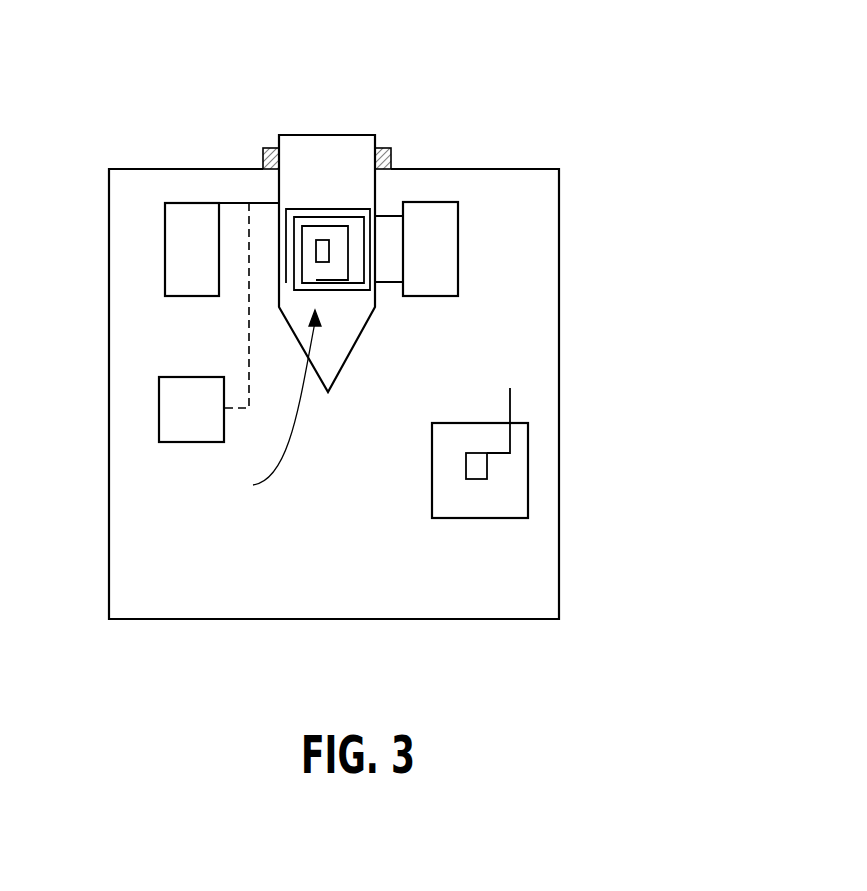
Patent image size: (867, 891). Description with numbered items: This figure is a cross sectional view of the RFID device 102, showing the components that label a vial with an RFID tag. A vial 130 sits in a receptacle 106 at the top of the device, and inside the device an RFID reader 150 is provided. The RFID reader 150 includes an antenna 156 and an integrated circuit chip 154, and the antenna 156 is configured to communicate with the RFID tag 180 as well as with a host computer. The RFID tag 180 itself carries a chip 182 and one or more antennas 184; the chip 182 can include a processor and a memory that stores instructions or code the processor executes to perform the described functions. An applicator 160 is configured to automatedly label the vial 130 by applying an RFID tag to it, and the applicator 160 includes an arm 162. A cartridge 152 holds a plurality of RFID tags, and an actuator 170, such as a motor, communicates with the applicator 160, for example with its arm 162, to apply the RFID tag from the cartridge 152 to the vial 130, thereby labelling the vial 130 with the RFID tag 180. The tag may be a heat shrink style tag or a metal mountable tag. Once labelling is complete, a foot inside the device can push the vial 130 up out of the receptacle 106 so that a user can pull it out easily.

The RFID device 102 is at (620, 49).
The receptacle 106 is at (391, 160).
The vial 130 is at (328, 135).
The RFID reader 150 is at (522, 458).
The cartridge 152 is at (458, 248).
The integrated circuit chip 154 is at (474, 479).
The antenna 156 is at (510, 400).
The applicator 160 is at (165, 248).
The arm 162 is at (249, 203).
The actuator 170 is at (159, 408).
The RFID tag 180 is at (263, 407).
The chip 182 is at (322, 262).
The antenna 184 is at (357, 281).